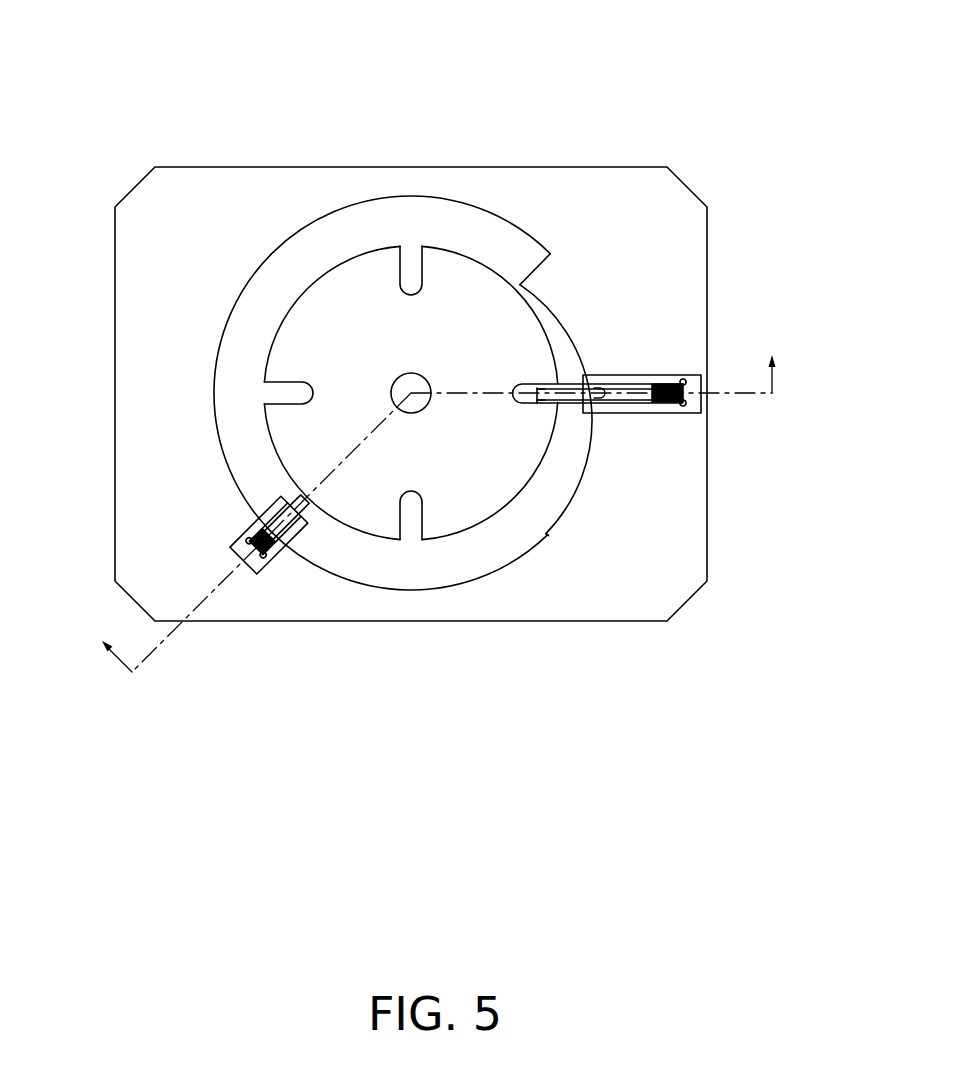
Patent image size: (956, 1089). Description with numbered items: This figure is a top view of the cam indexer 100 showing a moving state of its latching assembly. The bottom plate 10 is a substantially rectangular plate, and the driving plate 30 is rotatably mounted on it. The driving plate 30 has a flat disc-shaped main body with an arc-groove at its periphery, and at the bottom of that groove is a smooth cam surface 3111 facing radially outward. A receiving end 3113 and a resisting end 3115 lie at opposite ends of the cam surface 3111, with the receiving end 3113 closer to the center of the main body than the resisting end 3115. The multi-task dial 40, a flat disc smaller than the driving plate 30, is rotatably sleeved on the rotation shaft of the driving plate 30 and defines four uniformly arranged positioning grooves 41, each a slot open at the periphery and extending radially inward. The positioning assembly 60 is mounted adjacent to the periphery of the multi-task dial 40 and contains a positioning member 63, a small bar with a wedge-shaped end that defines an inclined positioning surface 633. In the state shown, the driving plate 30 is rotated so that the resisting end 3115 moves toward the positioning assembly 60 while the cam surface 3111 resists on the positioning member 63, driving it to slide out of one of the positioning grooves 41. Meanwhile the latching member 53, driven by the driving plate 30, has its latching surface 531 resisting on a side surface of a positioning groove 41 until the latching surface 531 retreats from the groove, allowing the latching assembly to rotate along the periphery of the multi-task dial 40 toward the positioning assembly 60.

The cam indexer 100 is at (437, 36).
The bottom plate 10 is at (484, 190).
The driving plate 30 is at (514, 391).
The cam surface 3111 is at (590, 457).
The receiving end 3113 is at (520, 287).
The resisting end 3115 is at (548, 535).
The multi-task dial 40 is at (481, 396).
The positioning grooves 41 is at (525, 388).
The positioning assembly 60 is at (660, 286).
The positioning member 63 is at (654, 281).
The positioning surface 633 is at (540, 389).
The latching member 53 is at (221, 577).
The latching surface 531 is at (305, 522).